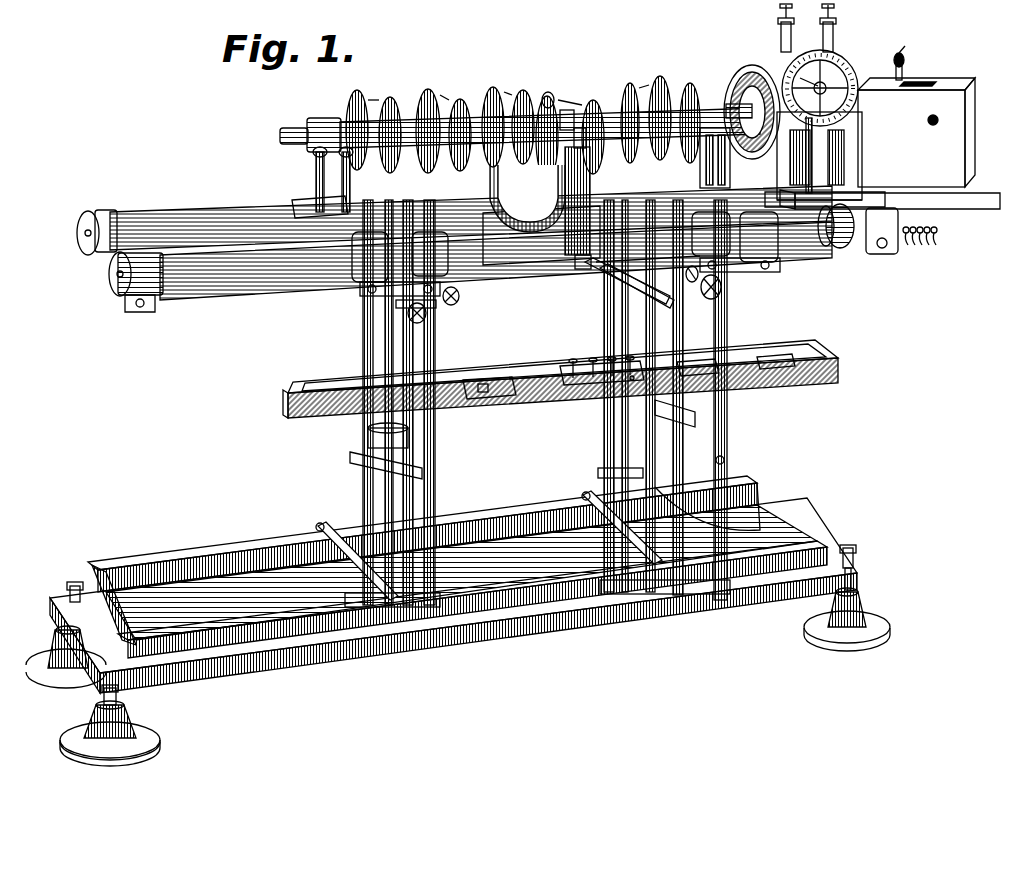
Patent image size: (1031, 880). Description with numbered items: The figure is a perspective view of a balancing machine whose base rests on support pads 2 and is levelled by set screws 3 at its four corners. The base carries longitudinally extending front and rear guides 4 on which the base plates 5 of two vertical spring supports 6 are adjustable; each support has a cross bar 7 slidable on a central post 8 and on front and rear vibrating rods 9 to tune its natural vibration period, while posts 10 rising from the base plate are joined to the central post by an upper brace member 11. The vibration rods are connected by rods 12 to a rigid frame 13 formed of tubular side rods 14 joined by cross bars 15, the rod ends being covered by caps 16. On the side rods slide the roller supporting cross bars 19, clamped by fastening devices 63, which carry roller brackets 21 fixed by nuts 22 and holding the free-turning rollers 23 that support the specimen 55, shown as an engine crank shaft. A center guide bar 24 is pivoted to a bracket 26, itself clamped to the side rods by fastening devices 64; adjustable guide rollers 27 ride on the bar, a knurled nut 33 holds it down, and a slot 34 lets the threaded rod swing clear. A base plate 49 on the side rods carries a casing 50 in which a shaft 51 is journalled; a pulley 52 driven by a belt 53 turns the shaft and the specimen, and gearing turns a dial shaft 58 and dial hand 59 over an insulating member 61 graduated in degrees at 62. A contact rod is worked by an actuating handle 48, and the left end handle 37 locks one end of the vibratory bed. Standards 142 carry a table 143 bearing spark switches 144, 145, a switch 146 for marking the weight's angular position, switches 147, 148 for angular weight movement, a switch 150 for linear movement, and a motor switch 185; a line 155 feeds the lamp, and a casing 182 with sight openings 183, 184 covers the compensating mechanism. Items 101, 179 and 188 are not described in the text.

The support pads 2 is at (72, 690).
The set screws 3 is at (67, 590).
The front and rear guides 4 is at (755, 488).
The base plates 5 is at (318, 528).
The vertical spring supports 6 is at (363, 372).
The cross bar 7 is at (360, 461).
The central post 8 is at (363, 350).
The vibrating rods 9 is at (385, 327).
The posts 10 is at (436, 450).
The upper brace member 11 is at (500, 345).
The rods 12 is at (437, 305).
The rigid frame 13 is at (105, 218).
The side rods 14 is at (268, 260).
The cross bars 15 is at (205, 215).
The caps 16 is at (80, 236).
The roller supporting cross bars 19 is at (350, 262).
The roller brackets 21 is at (316, 172).
The nuts 22 is at (312, 202).
The rollers 23 is at (316, 154).
The bar 24 is at (570, 110).
The bracket 26 is at (548, 235).
The guide rollers 27 is at (548, 96).
The knurled nut 33 is at (572, 168).
The slot 34 is at (588, 148).
The left end handle 37 is at (428, 314).
The actuating handle 48 is at (738, 277).
The base plate 49 is at (965, 210).
The casing 50 is at (825, 159).
The shaft 51 is at (740, 106).
The pulley 52 is at (752, 66).
The belt 53 is at (770, 146).
The specimen 55 is at (470, 115).
The dial shaft 58 is at (840, 84).
The dial hand 59 is at (792, 40).
The insulating member 61 is at (835, 42).
The graduations 62 is at (845, 65).
The fastening devices 63 is at (366, 290).
The fastening devices 64 is at (582, 255).
The bracket 101 is at (660, 472).
The standards 142 is at (370, 470).
The table 143 is at (294, 412).
The spark switch 144 is at (700, 363).
The spark switch 145 is at (500, 380).
The switch 146 is at (776, 357).
The switch 147 is at (572, 368).
The switch 148 is at (609, 362).
The switch 150 is at (632, 380).
The line 155 is at (912, 54).
The plate 179 is at (615, 372).
The casing 182 is at (916, 132).
The sight opening 183 is at (905, 90).
The sight opening 184 is at (945, 112).
The motor switch 185 is at (840, 248).
The stud 188 is at (724, 461).